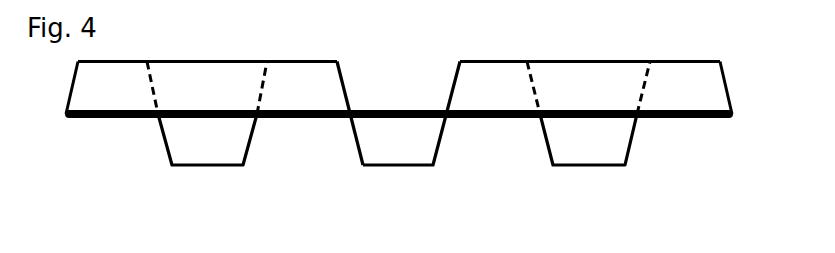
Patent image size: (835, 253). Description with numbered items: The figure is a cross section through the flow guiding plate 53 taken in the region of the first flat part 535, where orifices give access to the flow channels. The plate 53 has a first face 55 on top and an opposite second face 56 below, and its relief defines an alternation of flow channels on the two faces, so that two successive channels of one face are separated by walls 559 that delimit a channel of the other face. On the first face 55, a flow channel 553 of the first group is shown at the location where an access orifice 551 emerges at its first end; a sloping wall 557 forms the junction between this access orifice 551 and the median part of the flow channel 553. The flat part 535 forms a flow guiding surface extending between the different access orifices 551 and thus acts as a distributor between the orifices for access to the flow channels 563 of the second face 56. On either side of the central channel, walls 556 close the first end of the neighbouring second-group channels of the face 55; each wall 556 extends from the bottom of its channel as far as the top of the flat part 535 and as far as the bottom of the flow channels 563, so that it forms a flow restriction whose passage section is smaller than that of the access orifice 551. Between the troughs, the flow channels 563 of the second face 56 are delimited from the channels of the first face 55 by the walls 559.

The flow guiding plate 53 is at (673, 177).
The first flat part 535 is at (735, 112).
The first face 55 is at (212, 60).
The access orifice 551 is at (432, 103).
The flow channel of the first group 553 is at (421, 93).
The wall 556 is at (226, 154).
The sloping wall 557 is at (421, 154).
The wall 559 is at (348, 92).
The second face 56 is at (205, 168).
The flow channel 563 is at (324, 154).